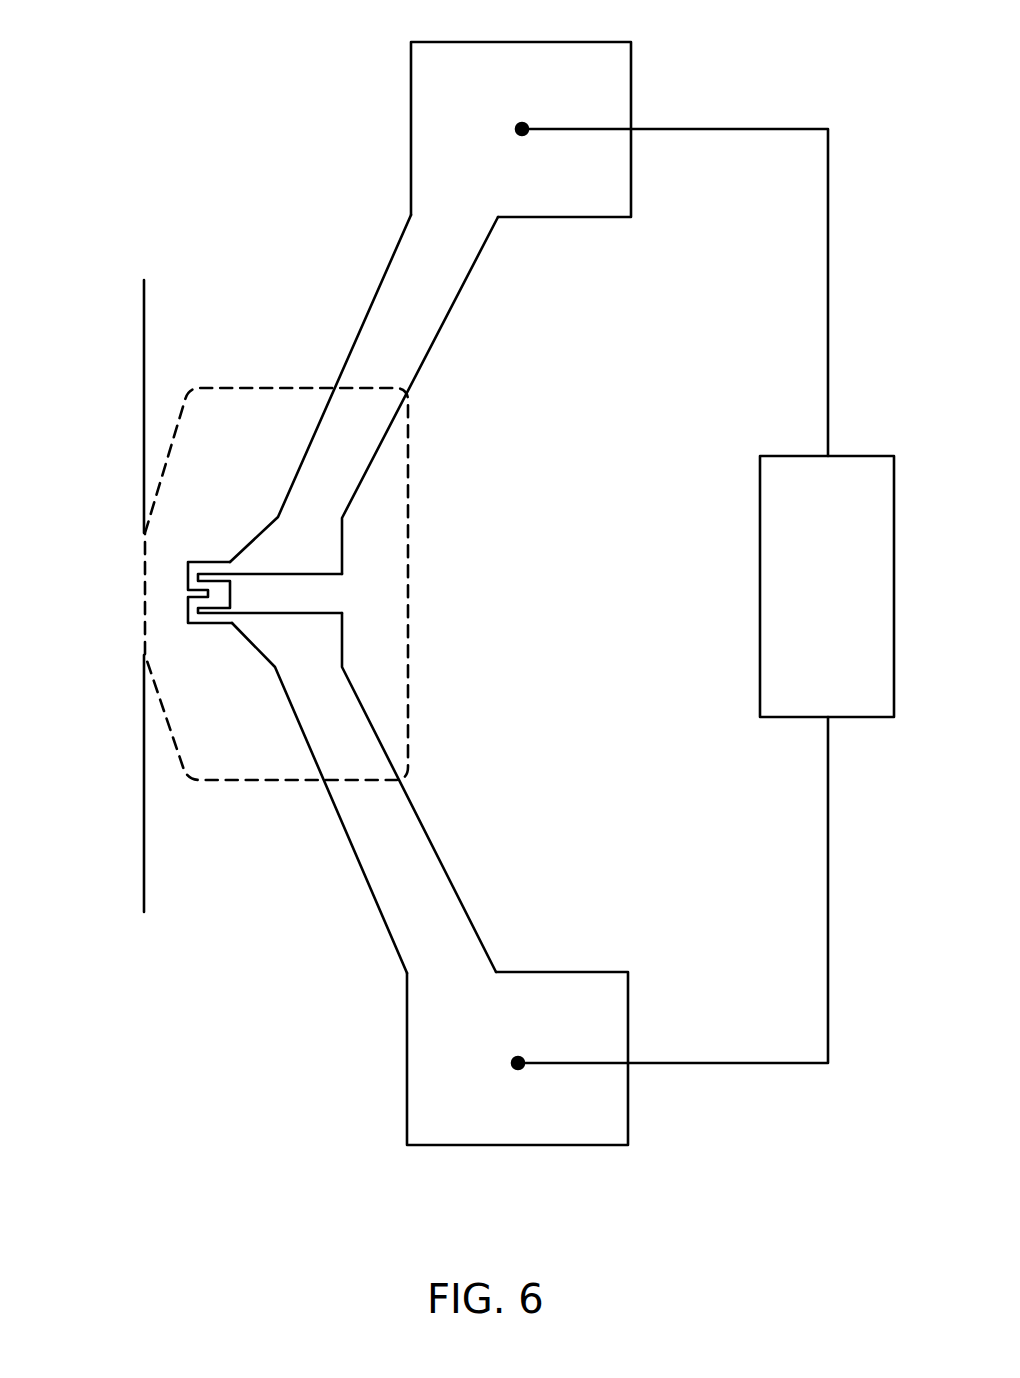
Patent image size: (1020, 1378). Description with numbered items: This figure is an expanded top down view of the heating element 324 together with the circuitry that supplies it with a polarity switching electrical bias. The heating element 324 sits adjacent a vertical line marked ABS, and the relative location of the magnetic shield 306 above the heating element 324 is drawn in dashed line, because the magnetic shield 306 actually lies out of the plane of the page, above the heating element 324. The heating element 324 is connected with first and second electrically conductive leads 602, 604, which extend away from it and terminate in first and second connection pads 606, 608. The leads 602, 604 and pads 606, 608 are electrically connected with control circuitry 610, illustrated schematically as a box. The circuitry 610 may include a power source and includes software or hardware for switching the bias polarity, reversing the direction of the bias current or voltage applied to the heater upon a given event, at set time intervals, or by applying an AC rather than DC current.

The magnetic shield 306 is at (270, 388).
The heating element 324 is at (188, 577).
The first electrically conductive lead 602 is at (397, 835).
The second electrically conductive lead 604 is at (403, 333).
The first connection pad 606 is at (440, 1040).
The second connection pad 608 is at (455, 103).
The control circuitry 610 is at (783, 565).
The air bearing surface ABS is at (144, 350).